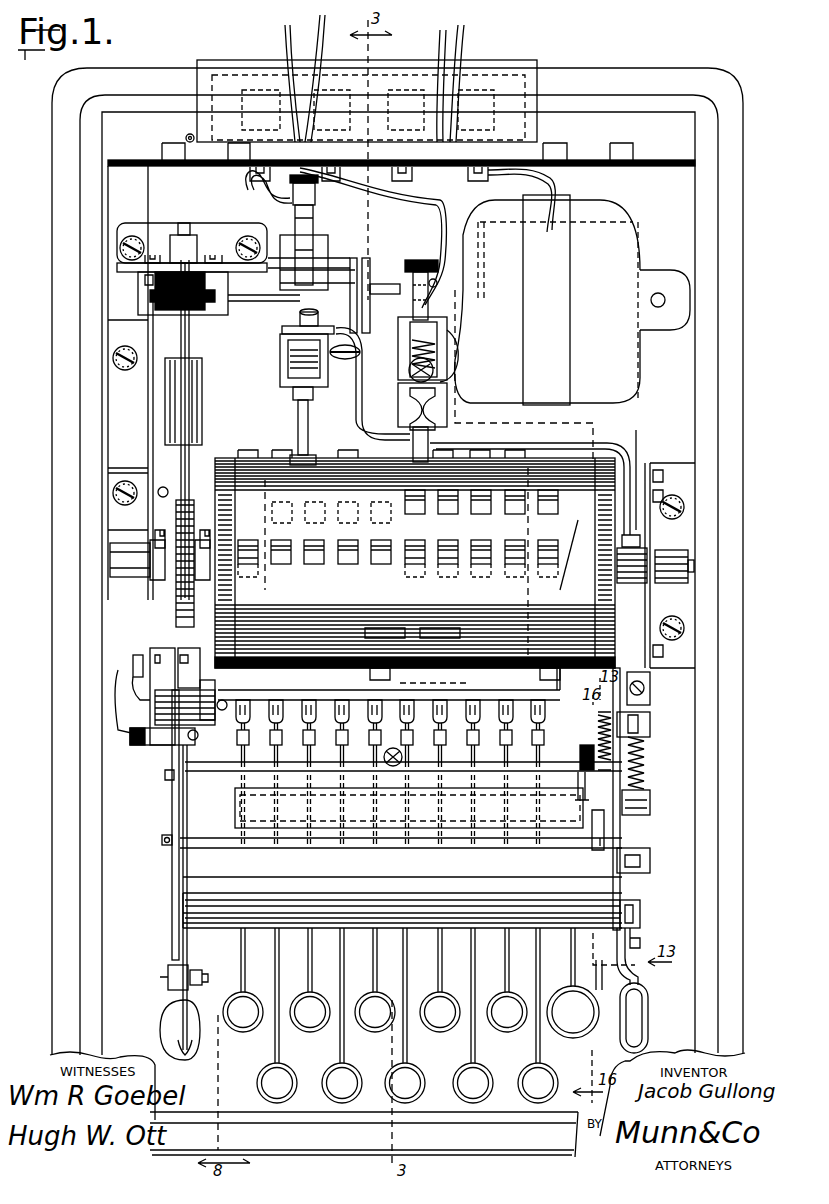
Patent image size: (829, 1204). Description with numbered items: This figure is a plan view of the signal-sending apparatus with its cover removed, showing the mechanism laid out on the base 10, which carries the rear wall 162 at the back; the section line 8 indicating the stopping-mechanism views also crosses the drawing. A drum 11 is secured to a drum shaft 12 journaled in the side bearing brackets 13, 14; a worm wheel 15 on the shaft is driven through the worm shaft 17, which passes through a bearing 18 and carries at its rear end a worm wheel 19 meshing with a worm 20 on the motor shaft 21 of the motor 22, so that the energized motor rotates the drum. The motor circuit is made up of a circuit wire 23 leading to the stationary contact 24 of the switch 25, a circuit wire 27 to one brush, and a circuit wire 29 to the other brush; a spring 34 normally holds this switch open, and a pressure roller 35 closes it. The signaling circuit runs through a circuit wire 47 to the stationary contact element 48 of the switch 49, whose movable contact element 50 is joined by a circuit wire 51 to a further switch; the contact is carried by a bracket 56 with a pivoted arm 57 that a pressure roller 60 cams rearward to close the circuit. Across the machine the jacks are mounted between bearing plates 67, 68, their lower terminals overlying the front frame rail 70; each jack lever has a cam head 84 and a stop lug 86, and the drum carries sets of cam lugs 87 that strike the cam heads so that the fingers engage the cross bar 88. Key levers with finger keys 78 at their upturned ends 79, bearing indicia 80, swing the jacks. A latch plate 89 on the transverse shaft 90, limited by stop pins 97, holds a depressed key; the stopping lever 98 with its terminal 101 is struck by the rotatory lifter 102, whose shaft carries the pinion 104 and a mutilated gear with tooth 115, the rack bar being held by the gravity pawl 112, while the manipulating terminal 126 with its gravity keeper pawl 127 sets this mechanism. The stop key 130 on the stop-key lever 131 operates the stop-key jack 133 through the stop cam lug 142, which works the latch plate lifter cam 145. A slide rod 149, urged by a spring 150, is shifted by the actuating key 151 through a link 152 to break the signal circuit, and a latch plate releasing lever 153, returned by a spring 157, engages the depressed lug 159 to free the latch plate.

The section line / shaft 8 is at (210, 331).
The base 10 is at (740, 416).
The drum 11 is at (415, 565).
The drum shaft 12 is at (692, 566).
The side bearing bracket 13 is at (147, 428).
The side bearing bracket 14 is at (652, 465).
The worm wheel 15 is at (174, 607).
The worm shaft 17 is at (190, 463).
The bearing 18 is at (204, 382).
The worm wheel 19 is at (208, 298).
The worm 20 is at (172, 315).
The motor shaft 21 is at (262, 305).
The motor 22 is at (572, 329).
The circuit wire 23 is at (447, 186).
The stationary contact 24 is at (455, 300).
The switch 25 is at (450, 365).
The circuit wire 27 is at (452, 380).
The circuit wire 29 is at (558, 183).
The spring 34 is at (447, 342).
The pressure roller 35 is at (447, 410).
The circuit wire 47 is at (238, 189).
The stationary contact element 48 is at (305, 290).
The switch 49 is at (336, 234).
The movable contact element 50 is at (288, 330).
The circuit wire 51 is at (386, 437).
The bracket 56 is at (292, 280).
The arm 57 is at (278, 340).
The pressure roller 60 is at (312, 372).
The bearing plate 67 is at (172, 819).
The bearing plate 68 is at (622, 828).
The front frame rail 70 is at (330, 699).
The keys 78 is at (325, 1070).
The upturned ends 79 is at (242, 946).
The indicia 80 is at (470, 1097).
The cam head 84 is at (308, 700).
The stop lug 86 is at (338, 742).
The cam lugs 87 is at (246, 545).
The cross bar 88 is at (422, 706).
The latch plate 89 is at (396, 808).
The transverse shaft 90 is at (162, 841).
The stop pins 97 is at (165, 779).
The lever 98 is at (185, 798).
The terminal 101 is at (165, 743).
The rotatory lifter 102 is at (130, 718).
The pinion 104 is at (185, 724).
The gravity pawl 112 is at (150, 670).
The tooth 115 is at (212, 692).
The manipulating terminal 126 is at (160, 1036).
The gravity keeper pawl 127 is at (198, 984).
The stop key 130 is at (572, 1036).
The stop-key lever 131 is at (570, 985).
The stop-key jack 133 is at (580, 752).
The stop cam lug 142 is at (575, 555).
The latch plate lifter cam 145 is at (580, 770).
The slide rod 149 is at (642, 886).
The spring 150 is at (640, 760).
The actuating key 151 is at (650, 1018).
The link 152 is at (640, 926).
The latch plate releasing lever 153 is at (640, 797).
The spring 157 is at (636, 727).
The depressed lug 159 is at (605, 832).
The rear wall 162 is at (729, 161).